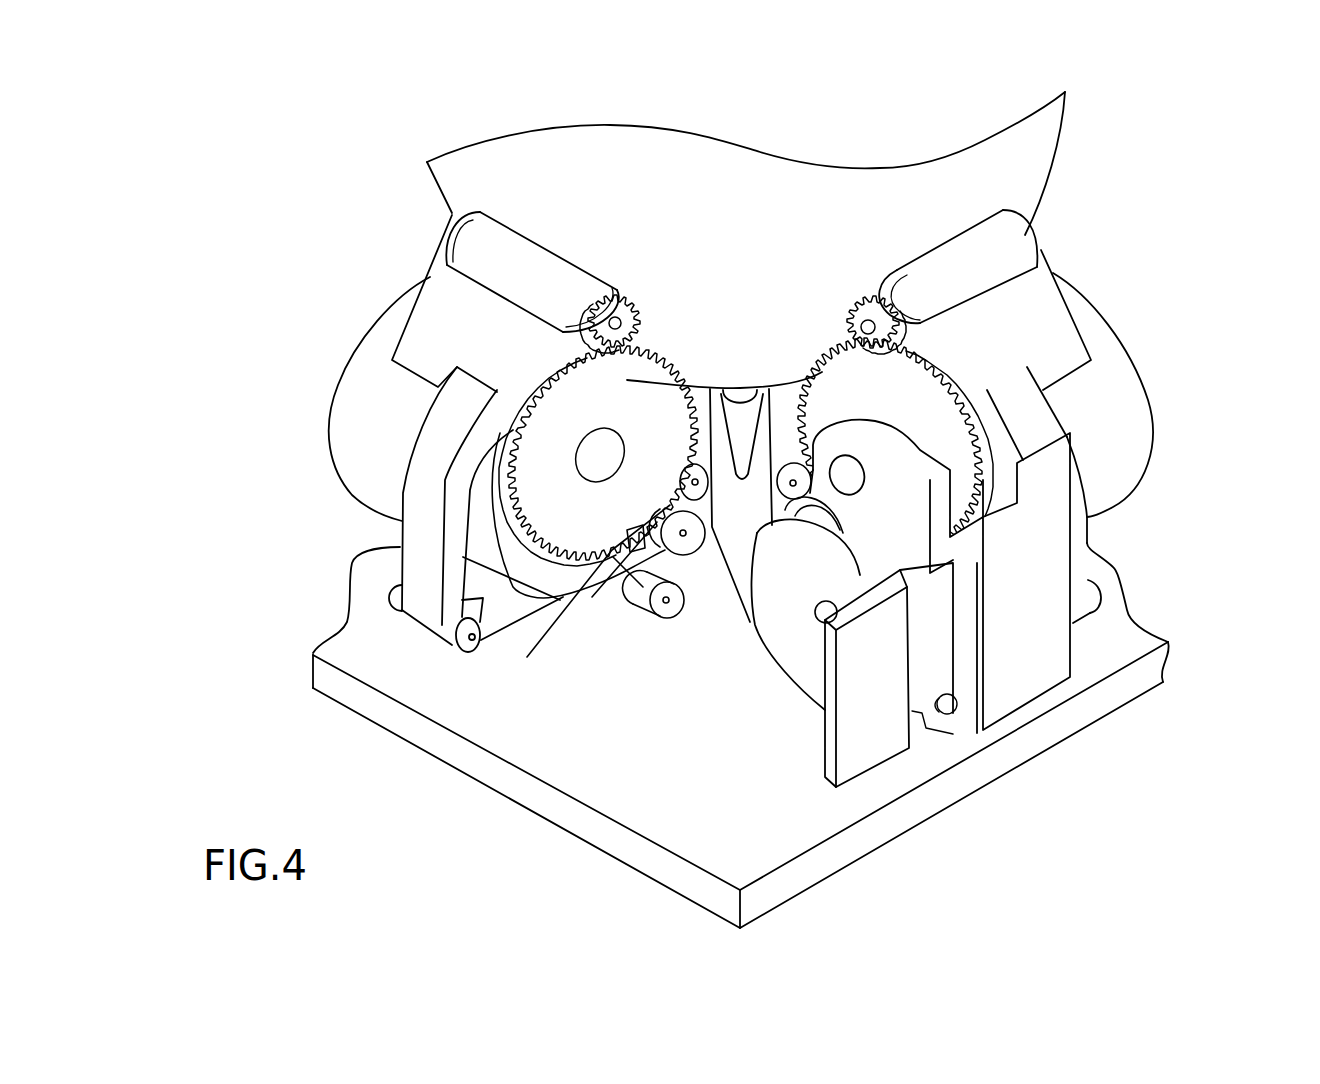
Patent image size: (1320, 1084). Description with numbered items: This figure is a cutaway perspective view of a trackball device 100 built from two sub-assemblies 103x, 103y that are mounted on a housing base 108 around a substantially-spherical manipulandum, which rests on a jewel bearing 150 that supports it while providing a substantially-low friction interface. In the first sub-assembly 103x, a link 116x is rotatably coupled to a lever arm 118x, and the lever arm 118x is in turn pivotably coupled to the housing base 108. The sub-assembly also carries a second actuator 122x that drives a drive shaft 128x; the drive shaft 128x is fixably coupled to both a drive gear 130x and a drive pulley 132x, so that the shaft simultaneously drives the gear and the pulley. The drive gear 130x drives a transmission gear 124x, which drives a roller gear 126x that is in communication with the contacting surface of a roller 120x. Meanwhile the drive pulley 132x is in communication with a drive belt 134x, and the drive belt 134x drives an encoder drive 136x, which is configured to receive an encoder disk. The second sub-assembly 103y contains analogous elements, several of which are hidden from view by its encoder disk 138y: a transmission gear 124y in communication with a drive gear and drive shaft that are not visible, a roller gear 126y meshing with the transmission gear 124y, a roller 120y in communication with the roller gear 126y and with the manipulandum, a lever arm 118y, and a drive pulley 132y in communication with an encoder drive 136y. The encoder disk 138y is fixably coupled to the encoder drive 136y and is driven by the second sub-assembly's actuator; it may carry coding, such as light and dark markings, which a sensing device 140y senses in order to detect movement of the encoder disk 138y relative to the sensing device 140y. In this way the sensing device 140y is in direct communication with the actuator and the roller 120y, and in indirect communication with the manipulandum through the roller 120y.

The device 100 is at (327, 163).
The sub-assembly 103x is at (262, 323).
The sub-assembly 103y is at (1193, 393).
The housing base 108 is at (363, 627).
The link 116x is at (475, 640).
The lever arm 118x is at (440, 303).
The lever arm 118y is at (1020, 327).
The roller 120x is at (510, 243).
The roller 120y is at (988, 252).
The second actuator 122x is at (367, 432).
The transmission gear 124x is at (676, 365).
The transmission gear 124y is at (863, 387).
The roller gear 126x is at (617, 300).
The roller gear 126y is at (887, 300).
The drive shaft 128x is at (683, 533).
The drive gear 130x is at (522, 663).
The drive pulley 132x is at (698, 533).
The drive pulley 132y is at (800, 512).
The drive belt 134x is at (637, 583).
The encoder drive 136x is at (657, 613).
The encoder drive 136y is at (800, 597).
The encoder disk 138y is at (780, 600).
The sensing device 140y is at (867, 750).
The jewel bearing 150 is at (747, 393).